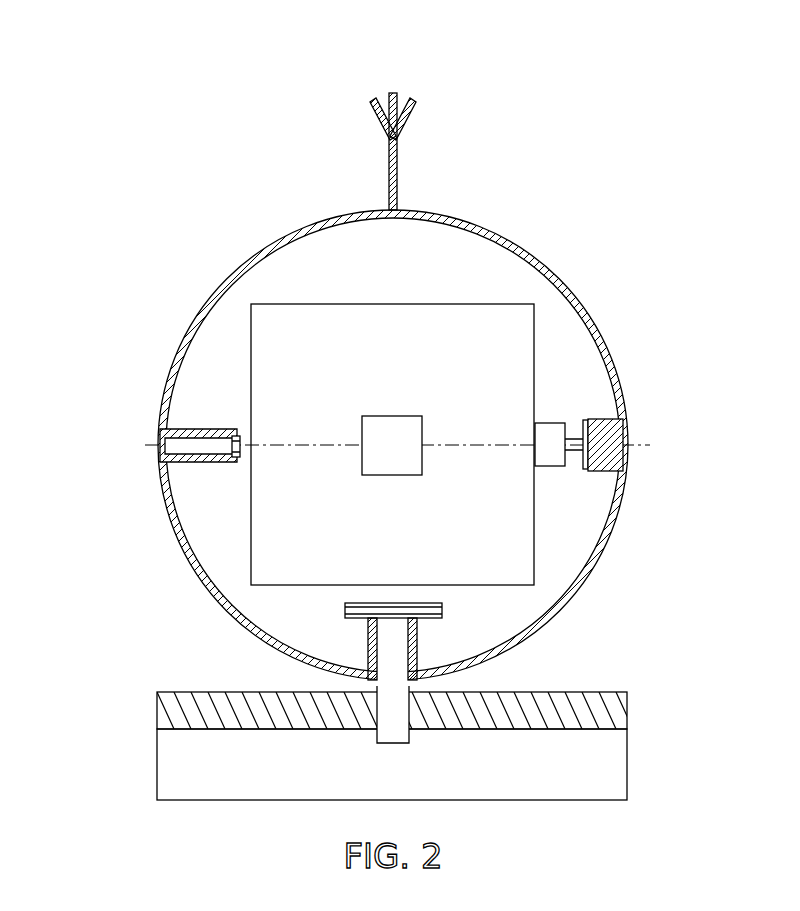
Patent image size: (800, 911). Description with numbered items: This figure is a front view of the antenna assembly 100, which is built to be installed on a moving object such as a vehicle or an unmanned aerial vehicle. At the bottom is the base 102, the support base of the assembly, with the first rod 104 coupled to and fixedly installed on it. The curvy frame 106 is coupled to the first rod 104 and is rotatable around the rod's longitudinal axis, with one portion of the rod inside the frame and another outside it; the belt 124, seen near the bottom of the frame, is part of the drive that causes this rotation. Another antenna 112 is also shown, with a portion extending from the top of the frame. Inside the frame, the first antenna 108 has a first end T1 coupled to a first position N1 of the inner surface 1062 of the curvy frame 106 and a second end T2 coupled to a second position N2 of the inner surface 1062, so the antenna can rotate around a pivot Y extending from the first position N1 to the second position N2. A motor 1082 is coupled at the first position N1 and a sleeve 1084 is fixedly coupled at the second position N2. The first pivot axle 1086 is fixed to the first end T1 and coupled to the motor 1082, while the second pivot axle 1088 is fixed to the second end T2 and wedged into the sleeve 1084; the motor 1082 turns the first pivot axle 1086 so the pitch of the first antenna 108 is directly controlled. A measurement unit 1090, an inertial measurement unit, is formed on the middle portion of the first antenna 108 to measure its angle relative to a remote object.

The antenna assembly 100 is at (704, 111).
The base 102 is at (157, 710).
The first rod 104 is at (393, 745).
The curvy frame 106 is at (546, 262).
The inner surface 1062 is at (588, 558).
The first antenna 108 is at (393, 315).
The motor 1082 is at (617, 432).
The sleeve 1084 is at (216, 462).
The first pivot axle 1086 is at (573, 440).
The second pivot axle 1088 is at (237, 437).
The measurement unit 1090 is at (393, 425).
The antenna 112 is at (389, 170).
The belt 124 is at (345, 609).
The first position N1 is at (608, 452).
The second position N2 is at (162, 444).
The pivot Y is at (663, 445).
The first end T1 is at (528, 440).
The second end T2 is at (258, 440).